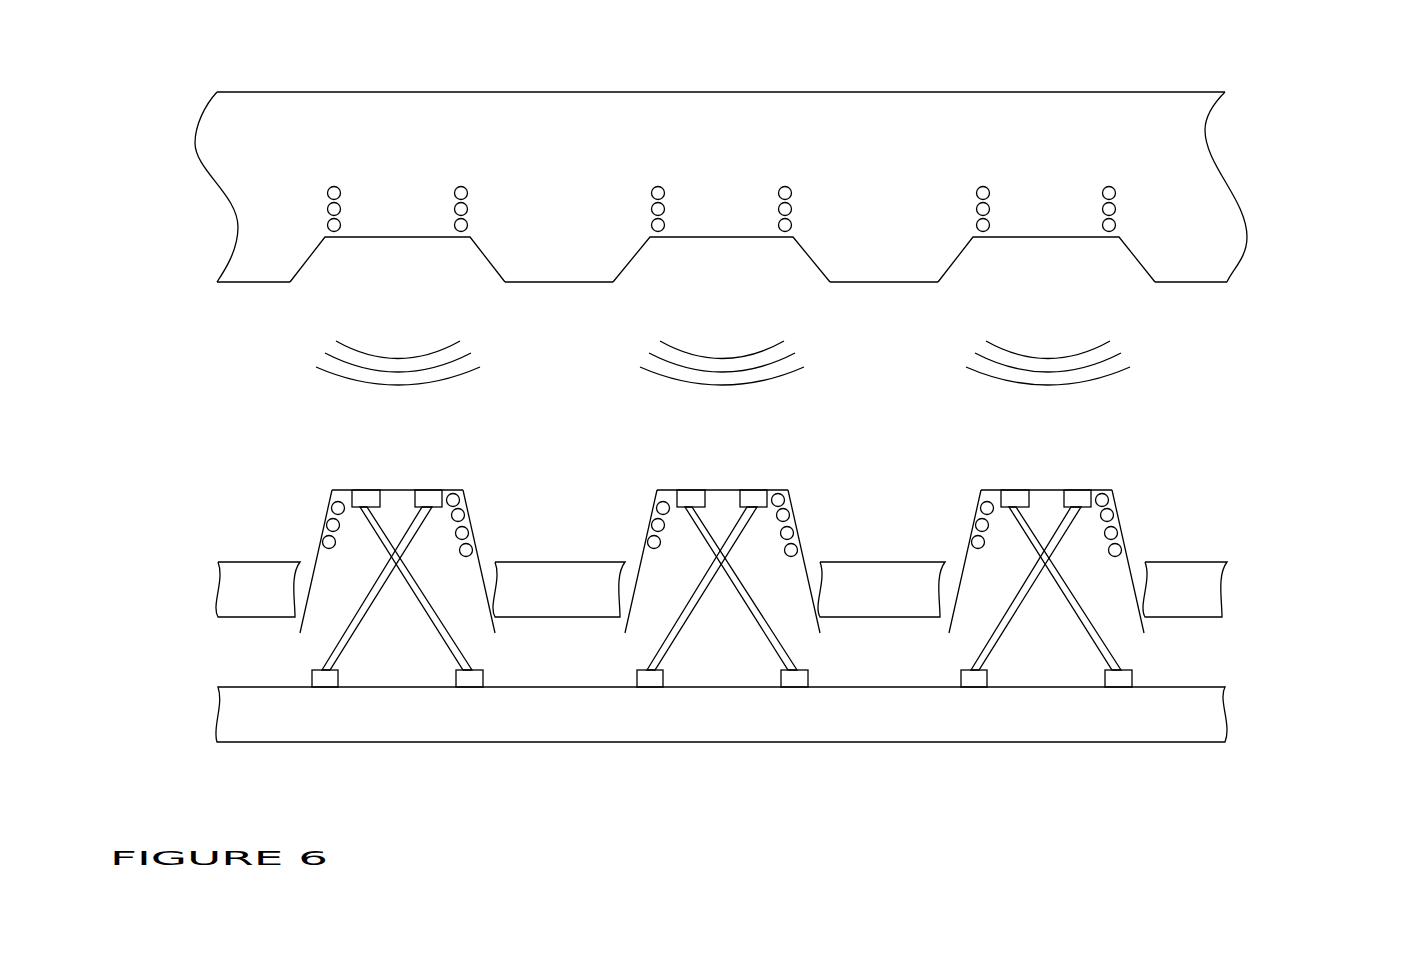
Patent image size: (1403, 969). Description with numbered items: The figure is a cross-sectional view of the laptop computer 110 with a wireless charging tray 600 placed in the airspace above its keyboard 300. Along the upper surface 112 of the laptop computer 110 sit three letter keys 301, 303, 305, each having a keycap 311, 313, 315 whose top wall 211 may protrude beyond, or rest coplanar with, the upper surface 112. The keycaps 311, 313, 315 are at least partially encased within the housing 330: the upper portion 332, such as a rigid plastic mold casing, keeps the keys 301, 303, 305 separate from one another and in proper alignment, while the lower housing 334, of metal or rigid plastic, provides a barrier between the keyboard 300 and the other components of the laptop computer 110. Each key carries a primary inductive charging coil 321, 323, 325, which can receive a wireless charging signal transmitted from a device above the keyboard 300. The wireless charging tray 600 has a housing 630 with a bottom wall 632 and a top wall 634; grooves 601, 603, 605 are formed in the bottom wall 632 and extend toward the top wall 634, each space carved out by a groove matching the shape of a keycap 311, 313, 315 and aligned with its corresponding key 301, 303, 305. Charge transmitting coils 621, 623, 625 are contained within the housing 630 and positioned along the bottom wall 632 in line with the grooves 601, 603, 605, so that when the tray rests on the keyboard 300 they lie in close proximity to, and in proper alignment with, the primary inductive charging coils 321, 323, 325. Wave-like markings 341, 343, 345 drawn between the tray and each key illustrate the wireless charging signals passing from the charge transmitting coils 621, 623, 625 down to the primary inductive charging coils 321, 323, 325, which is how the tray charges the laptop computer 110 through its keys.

The laptop computer 110 is at (794, 652).
The upper surface 112 is at (1213, 560).
The top wall 211 is at (398, 490).
The keyboard 300 is at (162, 472).
The letter key 301 is at (381, 511).
The letter key 303 is at (708, 575).
The letter key 305 is at (1030, 575).
The keycap 311 is at (465, 495).
The keycap 313 is at (790, 495).
The keycap 315 is at (1114, 495).
The primary inductive charging coil 321 is at (322, 542).
The primary inductive charging coil 323 is at (647, 542).
The primary inductive charging coil 325 is at (971, 542).
The housing 330 is at (1243, 717).
The upper portion 332 is at (721, 589).
The lower housing 334 is at (721, 714).
The acoustic waves from first element 341 is at (389, 376).
The acoustic waves from second element 343 is at (718, 377).
The acoustic waves from third element 345 is at (1046, 376).
The wireless charging tray 600 is at (163, 83).
The groove 601 is at (397, 259).
The groove 603 is at (721, 259).
The groove 605 is at (1046, 259).
The charge transmitting coil 621 is at (454, 225).
The charge transmitting coil 623 is at (651, 225).
The charge transmitting coil 625 is at (976, 225).
The housing 630 is at (1213, 155).
The bottom wall 632 is at (1197, 282).
The top wall 634 is at (973, 92).